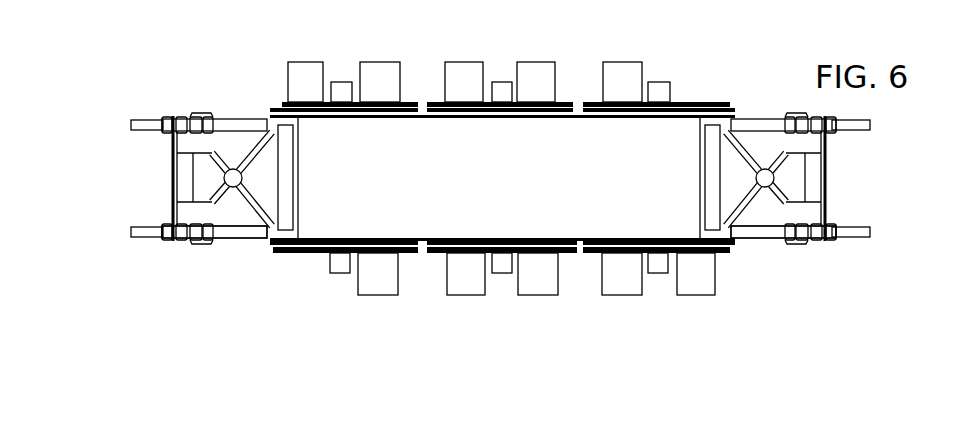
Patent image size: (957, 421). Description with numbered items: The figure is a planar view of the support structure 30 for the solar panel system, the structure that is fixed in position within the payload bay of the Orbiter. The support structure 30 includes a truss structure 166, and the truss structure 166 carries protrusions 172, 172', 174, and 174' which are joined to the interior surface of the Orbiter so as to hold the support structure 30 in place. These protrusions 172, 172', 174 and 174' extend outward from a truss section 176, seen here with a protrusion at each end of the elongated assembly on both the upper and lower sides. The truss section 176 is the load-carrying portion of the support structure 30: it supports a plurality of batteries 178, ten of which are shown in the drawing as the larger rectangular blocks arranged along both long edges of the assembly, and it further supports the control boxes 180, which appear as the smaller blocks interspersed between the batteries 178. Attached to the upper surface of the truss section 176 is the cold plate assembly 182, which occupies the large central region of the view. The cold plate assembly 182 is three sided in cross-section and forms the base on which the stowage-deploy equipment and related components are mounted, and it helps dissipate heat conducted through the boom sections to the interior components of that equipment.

The support structure 30 is at (235, 241).
The truss structure 166 is at (247, 150).
The protrusion 172 is at (141, 265).
The protrusion 172' is at (138, 92).
The protrusion 174 is at (862, 257).
The protrusion 174' is at (869, 157).
The truss section 176 is at (770, 231).
The batteries 178 is at (288, 66).
The control boxes 180 is at (340, 82).
The cold plate assembly 182 is at (408, 181).